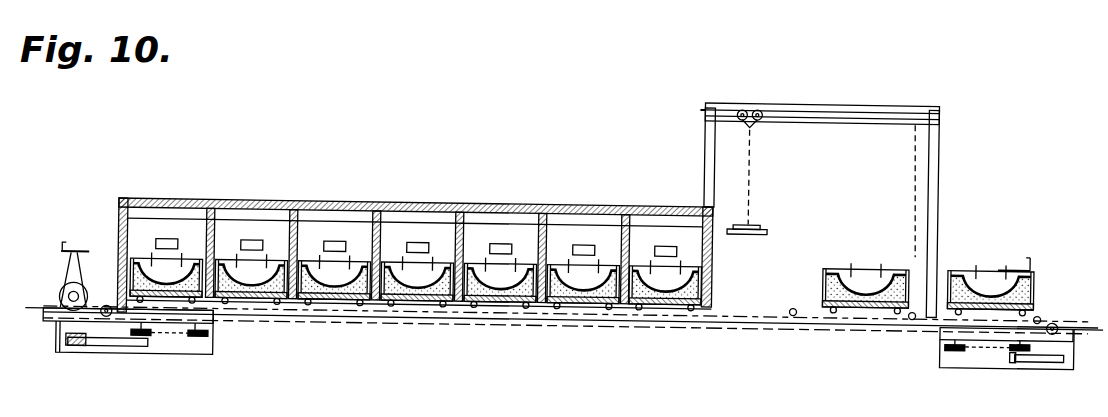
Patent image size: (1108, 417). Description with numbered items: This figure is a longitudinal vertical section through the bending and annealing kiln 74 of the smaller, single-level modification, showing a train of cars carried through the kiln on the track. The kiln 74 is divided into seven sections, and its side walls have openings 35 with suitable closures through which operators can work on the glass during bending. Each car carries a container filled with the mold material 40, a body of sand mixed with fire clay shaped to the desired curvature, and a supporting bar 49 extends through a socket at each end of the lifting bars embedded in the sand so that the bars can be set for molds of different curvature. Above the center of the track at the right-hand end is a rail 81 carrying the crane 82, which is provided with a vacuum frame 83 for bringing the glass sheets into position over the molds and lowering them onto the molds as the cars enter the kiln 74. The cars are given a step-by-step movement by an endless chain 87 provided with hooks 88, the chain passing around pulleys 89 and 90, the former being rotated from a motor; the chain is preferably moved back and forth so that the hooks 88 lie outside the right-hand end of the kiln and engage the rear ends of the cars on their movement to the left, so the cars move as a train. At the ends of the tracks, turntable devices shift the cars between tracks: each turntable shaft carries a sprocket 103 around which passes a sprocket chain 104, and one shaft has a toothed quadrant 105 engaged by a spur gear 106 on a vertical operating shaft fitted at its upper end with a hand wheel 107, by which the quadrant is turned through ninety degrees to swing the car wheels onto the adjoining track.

The openings 35 is at (326, 242).
The mold material 40 is at (729, 281).
The supporting bar 49 is at (603, 275).
The bending and annealing kiln 74 is at (483, 200).
The rail 81 is at (808, 94).
The crane 82 is at (751, 118).
The vacuum frame 83 is at (758, 219).
The endless chain 87 is at (840, 311).
The hooks 88 is at (797, 298).
The pulley 89 is at (106, 306).
The pulley 90 is at (1058, 312).
The sprocket 103 is at (150, 336).
The sprocket chain 104 is at (180, 353).
The toothed quadrant 105 is at (113, 346).
The spur gear 106 is at (60, 352).
The hand wheel 107 is at (77, 252).